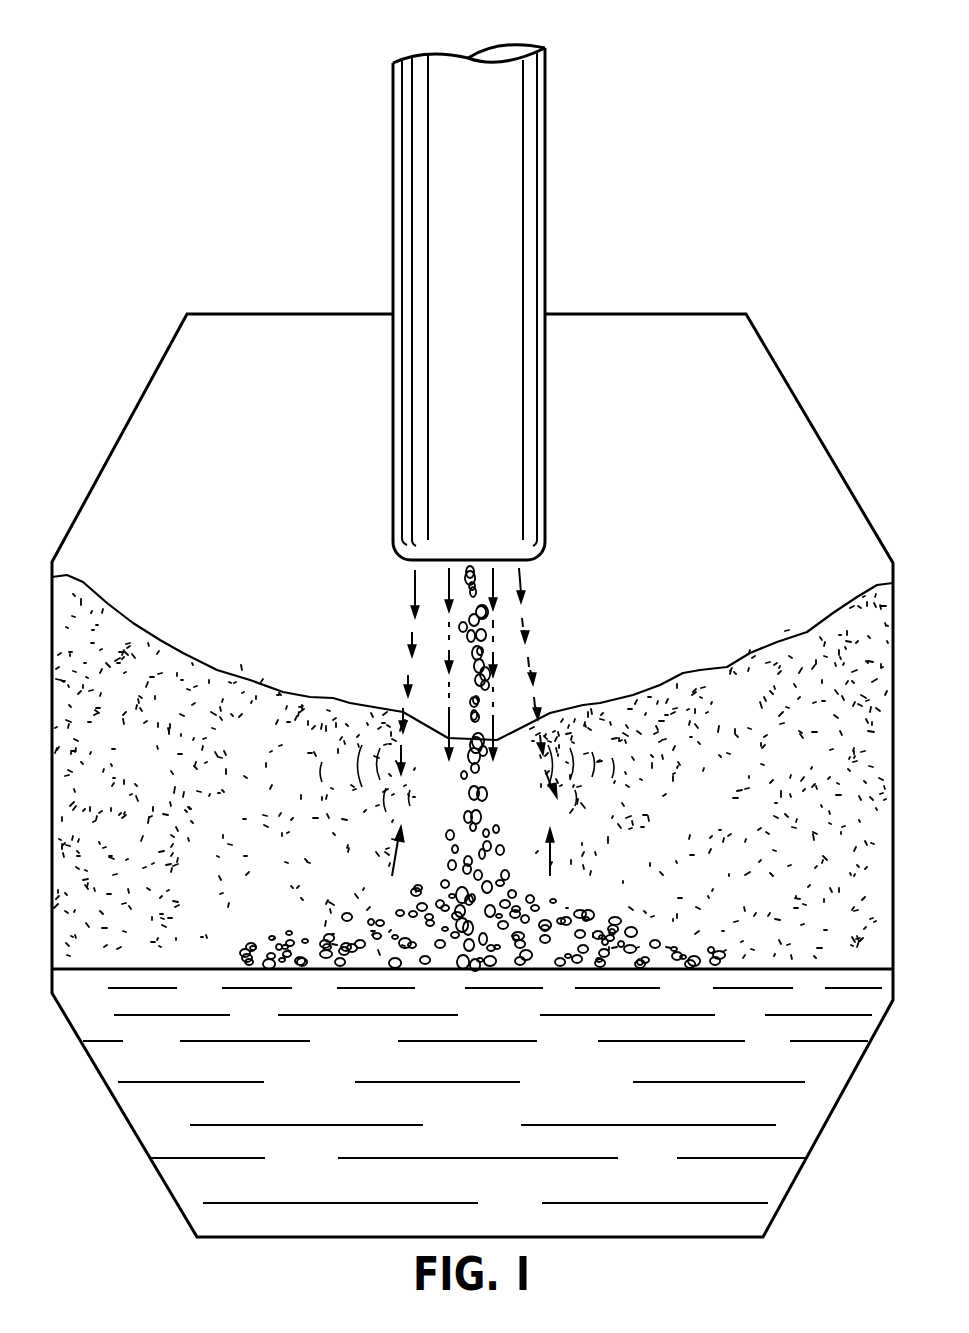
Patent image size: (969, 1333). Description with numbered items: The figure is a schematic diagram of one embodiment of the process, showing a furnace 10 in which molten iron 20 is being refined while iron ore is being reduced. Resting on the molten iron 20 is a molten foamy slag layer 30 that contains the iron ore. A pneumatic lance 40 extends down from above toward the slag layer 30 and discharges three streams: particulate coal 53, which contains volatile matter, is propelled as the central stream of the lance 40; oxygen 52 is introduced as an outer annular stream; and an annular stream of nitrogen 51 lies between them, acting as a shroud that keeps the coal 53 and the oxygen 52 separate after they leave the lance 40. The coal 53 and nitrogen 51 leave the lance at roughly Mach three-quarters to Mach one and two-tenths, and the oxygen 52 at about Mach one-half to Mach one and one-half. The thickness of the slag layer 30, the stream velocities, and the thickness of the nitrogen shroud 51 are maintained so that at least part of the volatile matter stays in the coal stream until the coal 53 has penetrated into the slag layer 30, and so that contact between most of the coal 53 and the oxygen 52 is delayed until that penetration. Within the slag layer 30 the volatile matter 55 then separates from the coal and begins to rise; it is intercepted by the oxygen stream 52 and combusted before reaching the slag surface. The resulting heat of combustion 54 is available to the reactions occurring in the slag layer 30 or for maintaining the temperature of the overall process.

The furnace 10 is at (94, 1067).
The molten iron 20 is at (385, 1072).
The slag layer 30 is at (200, 850).
The pneumatic lance 40 is at (490, 443).
The nitrogen 51 is at (448, 583).
The oxygen 52 is at (412, 645).
The particulate coal 53 is at (448, 665).
The heat of combustion 54 is at (365, 742).
The volatile matter 55 is at (383, 865).